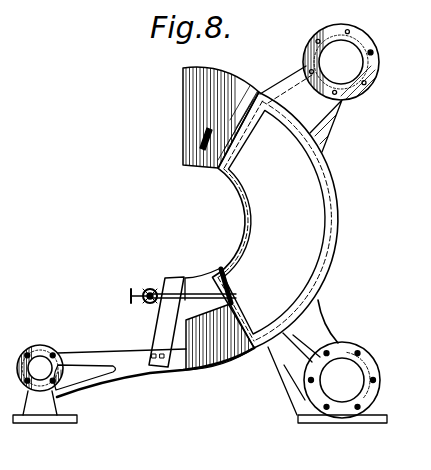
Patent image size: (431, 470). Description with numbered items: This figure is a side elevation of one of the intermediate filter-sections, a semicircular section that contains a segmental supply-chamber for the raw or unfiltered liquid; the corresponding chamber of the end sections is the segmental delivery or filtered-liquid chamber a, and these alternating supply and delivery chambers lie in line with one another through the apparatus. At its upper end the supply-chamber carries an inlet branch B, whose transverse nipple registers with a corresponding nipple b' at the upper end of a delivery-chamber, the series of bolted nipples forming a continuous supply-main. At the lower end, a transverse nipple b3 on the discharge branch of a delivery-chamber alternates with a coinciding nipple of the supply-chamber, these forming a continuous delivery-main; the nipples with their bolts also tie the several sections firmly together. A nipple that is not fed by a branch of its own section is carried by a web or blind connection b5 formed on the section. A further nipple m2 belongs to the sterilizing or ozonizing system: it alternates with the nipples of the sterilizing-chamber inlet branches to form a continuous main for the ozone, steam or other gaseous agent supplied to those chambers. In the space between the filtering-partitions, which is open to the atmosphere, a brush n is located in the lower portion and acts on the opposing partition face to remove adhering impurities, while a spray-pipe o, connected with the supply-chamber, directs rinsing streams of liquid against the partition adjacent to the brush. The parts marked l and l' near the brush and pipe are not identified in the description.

The inlet branch B is at (279, 240).
The segmental delivery or filtered-liquid chamber a is at (274, 222).
The brush n is at (233, 216).
The clamp wedge l' is at (209, 141).
The slide bar l is at (158, 322).
The spray-pipe o is at (151, 288).
The nipple of sterilizing-chamber main m2 is at (42, 357).
The nipple of delivery-chamber b' is at (348, 66).
The transverse nipple of discharge branch b3 is at (366, 360).
The web or blind connection b5 is at (316, 327).